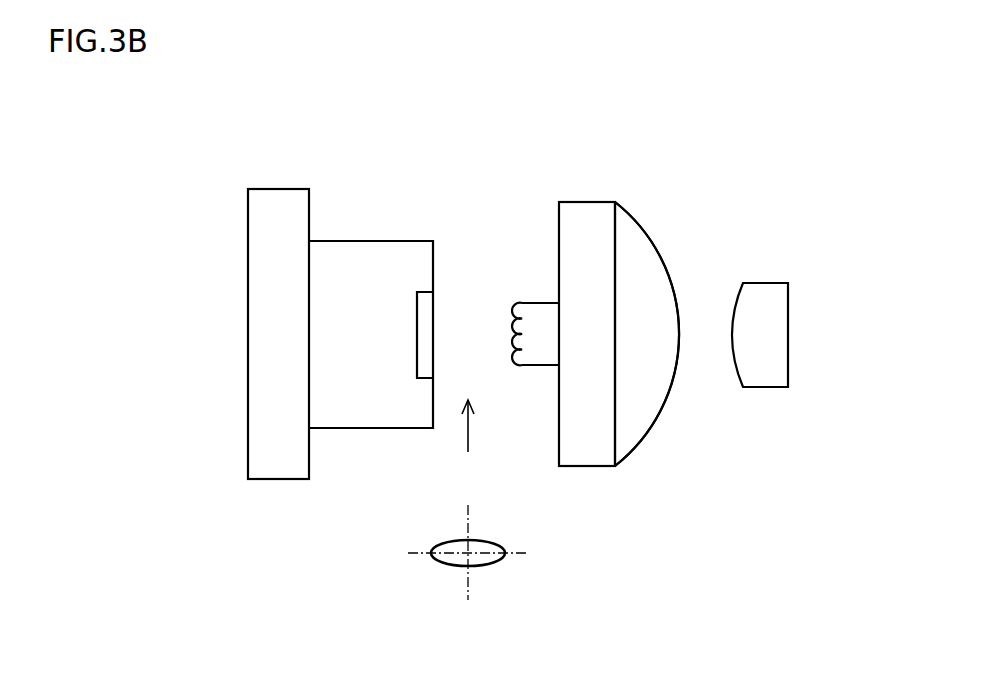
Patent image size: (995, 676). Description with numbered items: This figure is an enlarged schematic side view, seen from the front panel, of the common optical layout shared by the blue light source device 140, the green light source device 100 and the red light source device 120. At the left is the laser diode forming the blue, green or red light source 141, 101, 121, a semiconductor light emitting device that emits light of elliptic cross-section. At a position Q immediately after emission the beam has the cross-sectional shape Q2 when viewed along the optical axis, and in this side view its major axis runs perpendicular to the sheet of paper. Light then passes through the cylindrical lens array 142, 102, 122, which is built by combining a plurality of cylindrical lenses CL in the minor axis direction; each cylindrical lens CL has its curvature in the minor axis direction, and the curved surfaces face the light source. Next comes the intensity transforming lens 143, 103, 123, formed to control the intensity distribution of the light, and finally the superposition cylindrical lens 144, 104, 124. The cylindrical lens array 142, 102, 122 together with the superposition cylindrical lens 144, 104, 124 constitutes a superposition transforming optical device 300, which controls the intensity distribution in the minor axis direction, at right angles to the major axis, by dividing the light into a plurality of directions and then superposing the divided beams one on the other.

The blue light source 141 is at (309, 292).
The green light source 101 is at (309, 292).
The red light source 121 is at (279, 210).
The blue light source device 140 is at (601, 259).
The green light source device 100 is at (601, 259).
The red light source device 120 is at (566, 187).
The cylindrical lens array 142 is at (472, 299).
The cylindrical lens array 102 is at (472, 299).
The cylindrical lens array 122 is at (472, 299).
The superposition transforming optical device 300 is at (472, 299).
The intensity transforming lens 143 is at (655, 285).
The intensity transforming lens 103 is at (655, 285).
The intensity transforming lens 123 is at (590, 231).
The superposition cylindrical lens 144 is at (781, 270).
The superposition cylindrical lens 104 is at (781, 270).
The superposition cylindrical lens 124 is at (759, 302).
The cylindrical lens CL is at (522, 363).
The position immediately after emission Q is at (468, 444).
The cross-sectional shape of emitted light Q2 is at (485, 569).